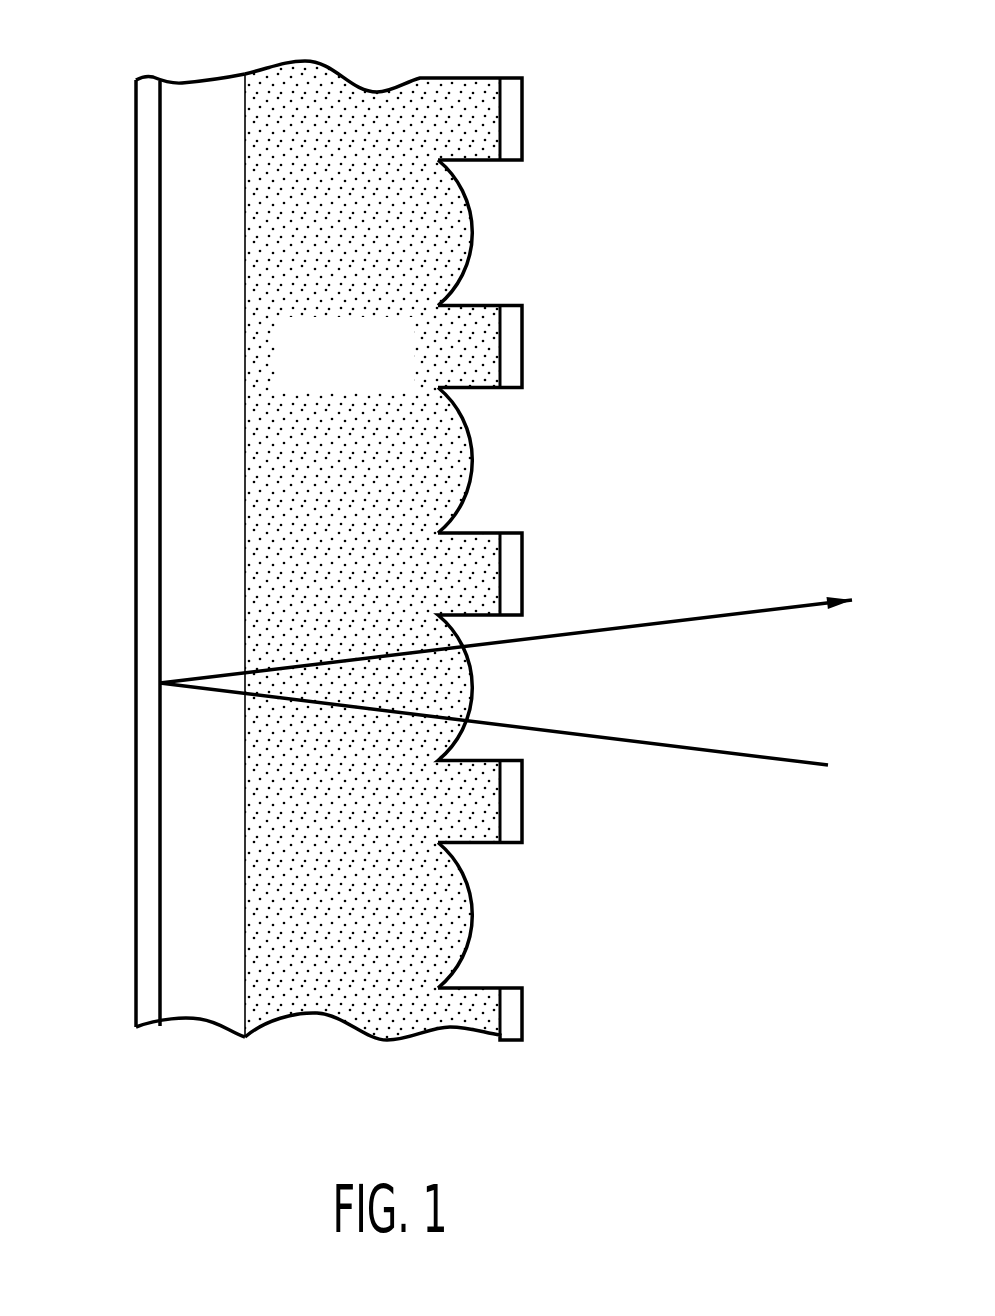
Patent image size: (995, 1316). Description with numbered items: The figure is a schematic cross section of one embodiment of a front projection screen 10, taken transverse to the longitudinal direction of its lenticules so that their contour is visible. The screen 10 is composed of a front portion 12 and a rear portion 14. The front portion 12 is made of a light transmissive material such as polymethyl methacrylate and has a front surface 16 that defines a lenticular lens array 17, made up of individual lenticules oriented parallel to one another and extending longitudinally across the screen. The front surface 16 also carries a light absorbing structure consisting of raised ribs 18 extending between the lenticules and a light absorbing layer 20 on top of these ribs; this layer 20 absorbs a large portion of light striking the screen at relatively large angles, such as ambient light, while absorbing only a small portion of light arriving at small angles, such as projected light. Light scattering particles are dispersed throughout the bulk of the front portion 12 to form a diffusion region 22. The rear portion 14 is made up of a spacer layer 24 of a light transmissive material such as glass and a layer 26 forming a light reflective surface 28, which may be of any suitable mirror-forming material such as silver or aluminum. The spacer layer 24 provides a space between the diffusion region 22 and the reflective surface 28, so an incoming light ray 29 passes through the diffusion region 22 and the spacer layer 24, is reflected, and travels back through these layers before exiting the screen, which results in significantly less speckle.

The screen 10 is at (70, 586).
The front portion 12 is at (414, 570).
The rear portion 14 is at (159, 570).
The front surface 16 is at (506, 916).
The lenticular lens array 17 is at (480, 246).
The raised ribs 18 is at (473, 532).
The light absorbing layer 20 is at (523, 323).
The diffusion region 22 is at (368, 105).
The spacer layer 24 is at (210, 97).
The layer 26 is at (147, 150).
The light reflective surface 28 is at (160, 327).
The incoming light ray 29 is at (810, 765).